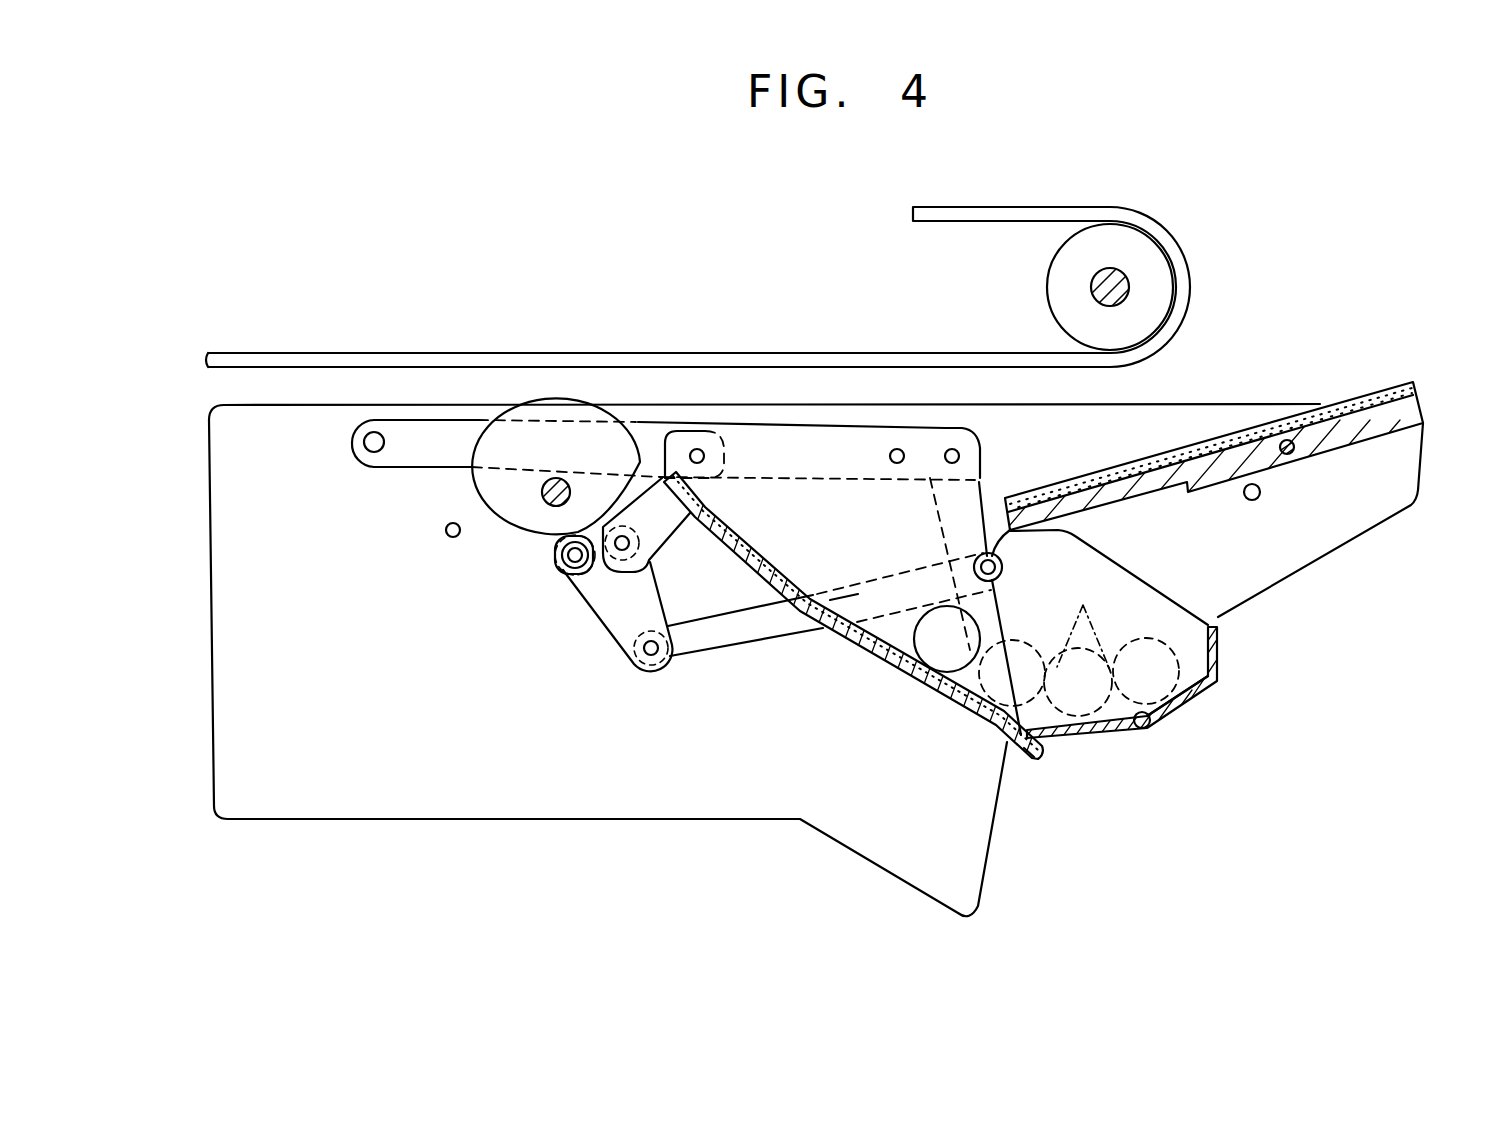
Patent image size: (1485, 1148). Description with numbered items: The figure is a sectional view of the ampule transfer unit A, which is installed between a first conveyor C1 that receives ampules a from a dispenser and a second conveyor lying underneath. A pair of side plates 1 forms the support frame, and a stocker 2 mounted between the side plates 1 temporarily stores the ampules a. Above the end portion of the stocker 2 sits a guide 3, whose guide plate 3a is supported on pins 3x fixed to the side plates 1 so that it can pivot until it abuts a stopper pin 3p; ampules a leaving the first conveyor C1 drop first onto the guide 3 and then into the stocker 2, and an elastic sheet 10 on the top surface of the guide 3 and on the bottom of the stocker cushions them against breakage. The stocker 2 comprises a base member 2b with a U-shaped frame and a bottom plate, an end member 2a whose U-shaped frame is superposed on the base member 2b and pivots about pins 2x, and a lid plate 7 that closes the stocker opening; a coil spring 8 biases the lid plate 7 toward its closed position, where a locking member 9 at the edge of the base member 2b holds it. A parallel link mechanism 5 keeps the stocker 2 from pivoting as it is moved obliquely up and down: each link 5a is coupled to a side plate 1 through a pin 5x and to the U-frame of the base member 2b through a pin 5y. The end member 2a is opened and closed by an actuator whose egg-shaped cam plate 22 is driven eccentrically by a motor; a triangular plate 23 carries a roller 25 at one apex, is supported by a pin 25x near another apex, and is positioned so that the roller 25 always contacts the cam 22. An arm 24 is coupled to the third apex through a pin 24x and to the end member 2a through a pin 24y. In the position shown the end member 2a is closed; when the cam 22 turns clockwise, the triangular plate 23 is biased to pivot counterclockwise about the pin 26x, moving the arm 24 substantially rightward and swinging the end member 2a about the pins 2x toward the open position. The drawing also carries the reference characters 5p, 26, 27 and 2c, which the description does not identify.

The side plates 1 is at (272, 812).
The first conveyor C1 is at (268, 342).
The parallel link mechanism 5 is at (662, 459).
The links 5a is at (418, 422).
The pin 5x is at (374, 432).
The pin 5y is at (697, 449).
The stopper pin 5p is at (446, 530).
The pins 2x is at (952, 449).
The cam plate 22 is at (545, 405).
The roller 25 is at (560, 548).
The pin 25x is at (560, 562).
The triangular plate 23 is at (605, 600).
The pin 24x is at (641, 660).
The link 26 is at (693, 495).
The pin 26x is at (632, 547).
The arm 24 is at (710, 634).
The pin 24y is at (1010, 530).
The base member 2b is at (845, 600).
The pin 27 is at (974, 561).
The elastic sheet 10 is at (884, 634).
The locking member 9 is at (1022, 752).
The stocker 2 is at (1106, 686).
The end member 2a is at (1183, 625).
The lid plate 7 is at (1062, 740).
The body lower edge 2c is at (1113, 744).
The coil spring 8 is at (1150, 724).
The ampules a is at (1083, 623).
The guide 3 is at (1232, 465).
The pins 3x is at (1292, 455).
The stopper pin 3p is at (1257, 500).
The guide plate 3a is at (1412, 506).
The ampule transfer unit A is at (1382, 348).